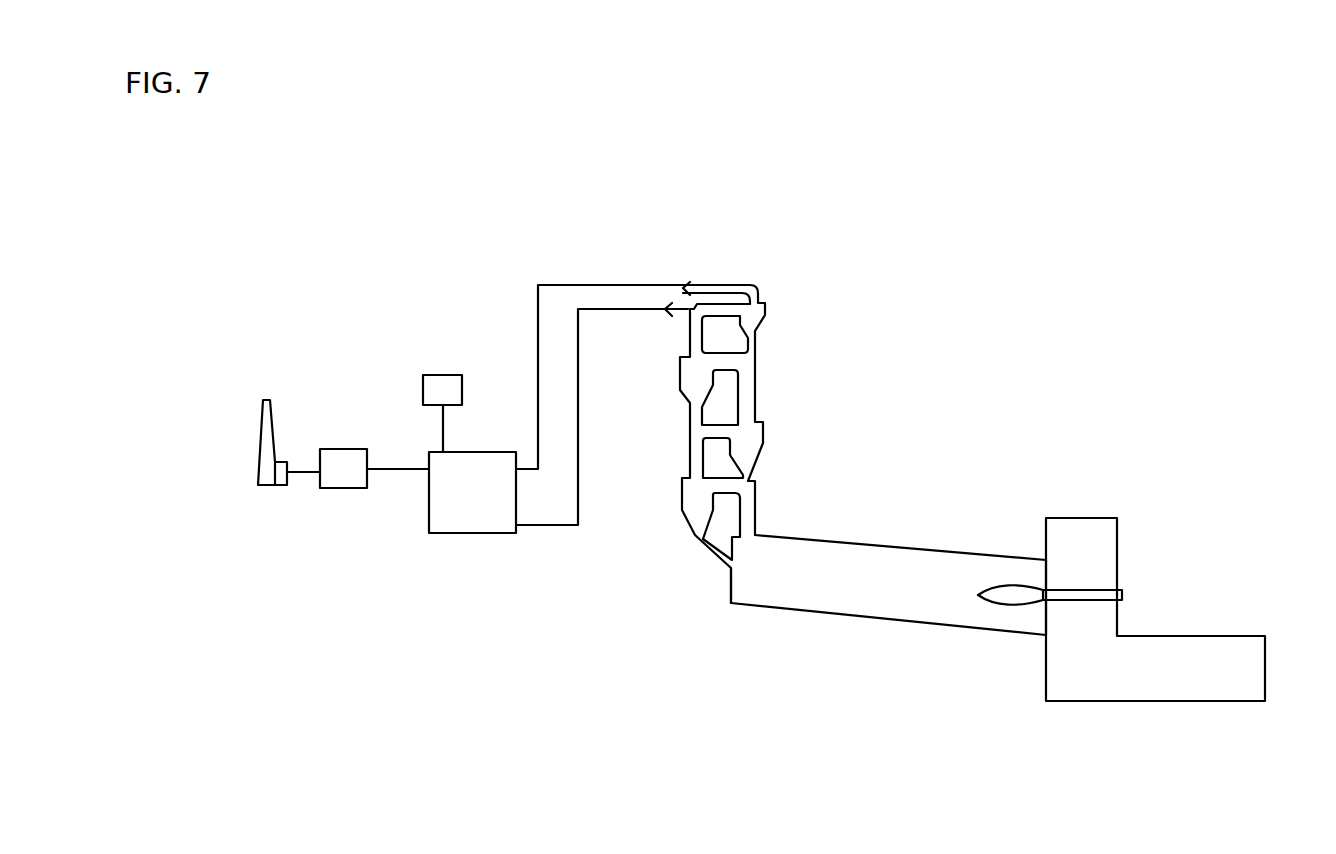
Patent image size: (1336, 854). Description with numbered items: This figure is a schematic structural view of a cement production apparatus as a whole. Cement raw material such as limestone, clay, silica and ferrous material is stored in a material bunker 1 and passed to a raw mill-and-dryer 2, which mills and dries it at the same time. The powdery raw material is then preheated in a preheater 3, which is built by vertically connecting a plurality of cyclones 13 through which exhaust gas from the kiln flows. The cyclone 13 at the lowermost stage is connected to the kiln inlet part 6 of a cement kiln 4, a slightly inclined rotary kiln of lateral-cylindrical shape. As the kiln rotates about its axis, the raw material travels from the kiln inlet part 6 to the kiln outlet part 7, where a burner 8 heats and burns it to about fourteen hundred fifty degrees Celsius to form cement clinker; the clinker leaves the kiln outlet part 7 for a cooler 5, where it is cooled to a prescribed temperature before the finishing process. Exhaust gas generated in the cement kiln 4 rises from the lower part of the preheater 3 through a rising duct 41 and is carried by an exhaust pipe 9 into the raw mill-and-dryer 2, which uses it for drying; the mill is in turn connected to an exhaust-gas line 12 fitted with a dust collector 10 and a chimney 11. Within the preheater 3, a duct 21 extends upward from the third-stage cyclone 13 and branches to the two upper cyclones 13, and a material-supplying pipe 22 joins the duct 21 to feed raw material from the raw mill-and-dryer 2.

The material bunker 1 is at (443, 375).
The raw mill-and-dryer 2 is at (457, 534).
The preheater 3 is at (794, 379).
The cement kiln 4 is at (905, 622).
The cooler 5 is at (1192, 645).
The kiln inlet part 6 is at (731, 603).
The kiln outlet part 7 is at (1047, 614).
The burner 8 is at (1087, 593).
The exhaust pipe 9 is at (609, 285).
The dust collector 10 is at (340, 489).
The chimney 11 is at (258, 431).
The exhaust-gas line 12 is at (402, 455).
The cyclone 13 is at (757, 313).
The duct 21 is at (696, 333).
The material-supplying pipe 22 is at (607, 313).
The rising duct 41 is at (752, 514).